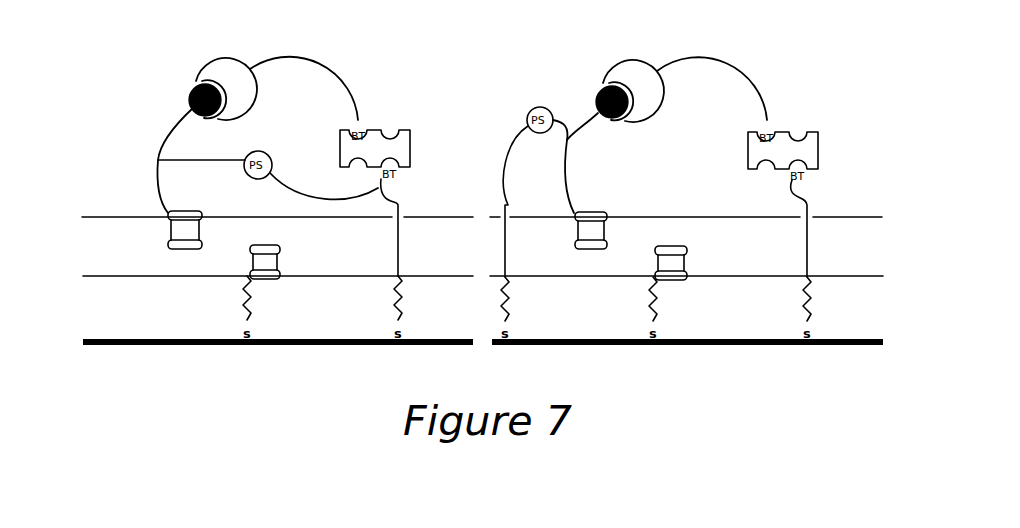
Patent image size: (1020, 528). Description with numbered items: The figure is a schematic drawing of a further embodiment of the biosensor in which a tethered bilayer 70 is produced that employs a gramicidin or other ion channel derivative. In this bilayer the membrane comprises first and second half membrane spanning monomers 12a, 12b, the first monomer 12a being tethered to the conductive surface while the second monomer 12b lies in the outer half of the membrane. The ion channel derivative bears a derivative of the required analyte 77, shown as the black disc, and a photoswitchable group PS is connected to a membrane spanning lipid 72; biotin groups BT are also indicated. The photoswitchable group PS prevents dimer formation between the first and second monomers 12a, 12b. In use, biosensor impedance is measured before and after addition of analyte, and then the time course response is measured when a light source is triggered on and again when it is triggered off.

The tethered bilayer 70 is at (90, 248).
The membrane spanning lipid 72 is at (400, 243).
The derivative of the required analyte 77 is at (190, 110).
The first half membrane spanning monomer 12a is at (280, 249).
The second half membrane spanning monomer 12b is at (200, 236).